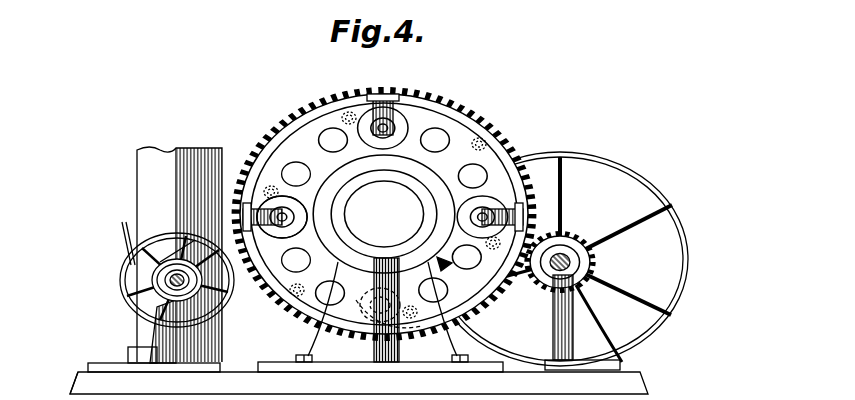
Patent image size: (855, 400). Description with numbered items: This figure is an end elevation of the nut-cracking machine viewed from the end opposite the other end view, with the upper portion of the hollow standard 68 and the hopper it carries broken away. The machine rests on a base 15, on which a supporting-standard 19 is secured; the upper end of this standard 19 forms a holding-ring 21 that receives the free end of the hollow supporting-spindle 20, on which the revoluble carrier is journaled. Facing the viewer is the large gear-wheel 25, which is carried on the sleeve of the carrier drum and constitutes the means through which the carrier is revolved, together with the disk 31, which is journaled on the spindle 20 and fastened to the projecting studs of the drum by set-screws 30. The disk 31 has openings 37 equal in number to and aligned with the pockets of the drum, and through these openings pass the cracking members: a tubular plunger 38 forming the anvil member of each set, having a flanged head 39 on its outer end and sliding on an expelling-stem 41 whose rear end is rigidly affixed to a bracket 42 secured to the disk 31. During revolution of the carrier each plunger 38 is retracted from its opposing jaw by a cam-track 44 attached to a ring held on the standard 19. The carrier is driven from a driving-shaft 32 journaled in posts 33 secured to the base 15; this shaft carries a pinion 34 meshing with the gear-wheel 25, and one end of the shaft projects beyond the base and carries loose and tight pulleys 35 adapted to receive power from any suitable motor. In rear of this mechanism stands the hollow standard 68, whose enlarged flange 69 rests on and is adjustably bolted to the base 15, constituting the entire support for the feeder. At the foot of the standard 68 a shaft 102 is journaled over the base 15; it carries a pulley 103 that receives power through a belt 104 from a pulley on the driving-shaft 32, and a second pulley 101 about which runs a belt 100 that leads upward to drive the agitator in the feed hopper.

The base 15 is at (359, 378).
The supporting-standard 19 is at (362, 324).
The supporting-spindle 20 is at (382, 178).
The holding-ring 21 is at (437, 188).
The gear-wheel 25 is at (432, 97).
The set-screws 30 is at (345, 117).
The disk 31 is at (402, 216).
The driving-shaft 32 is at (571, 262).
The posts 33 is at (597, 331).
The pinion 34 is at (586, 233).
The loose and tight pulleys 35 is at (641, 182).
The openings 37 is at (297, 163).
The tubular plunger 38 is at (296, 260).
The flanged head 39 is at (398, 143).
The expelling-stem 41 is at (405, 136).
The bracket 42 is at (388, 94).
The cam-track 44 is at (312, 192).
The hollow standard 68 is at (197, 148).
The enlarged flange 69 is at (104, 356).
The belt 100 is at (123, 245).
The pulley 101 is at (150, 263).
The shaft 102 is at (140, 322).
The pulley 103 is at (163, 288).
The belt 104 is at (176, 238).